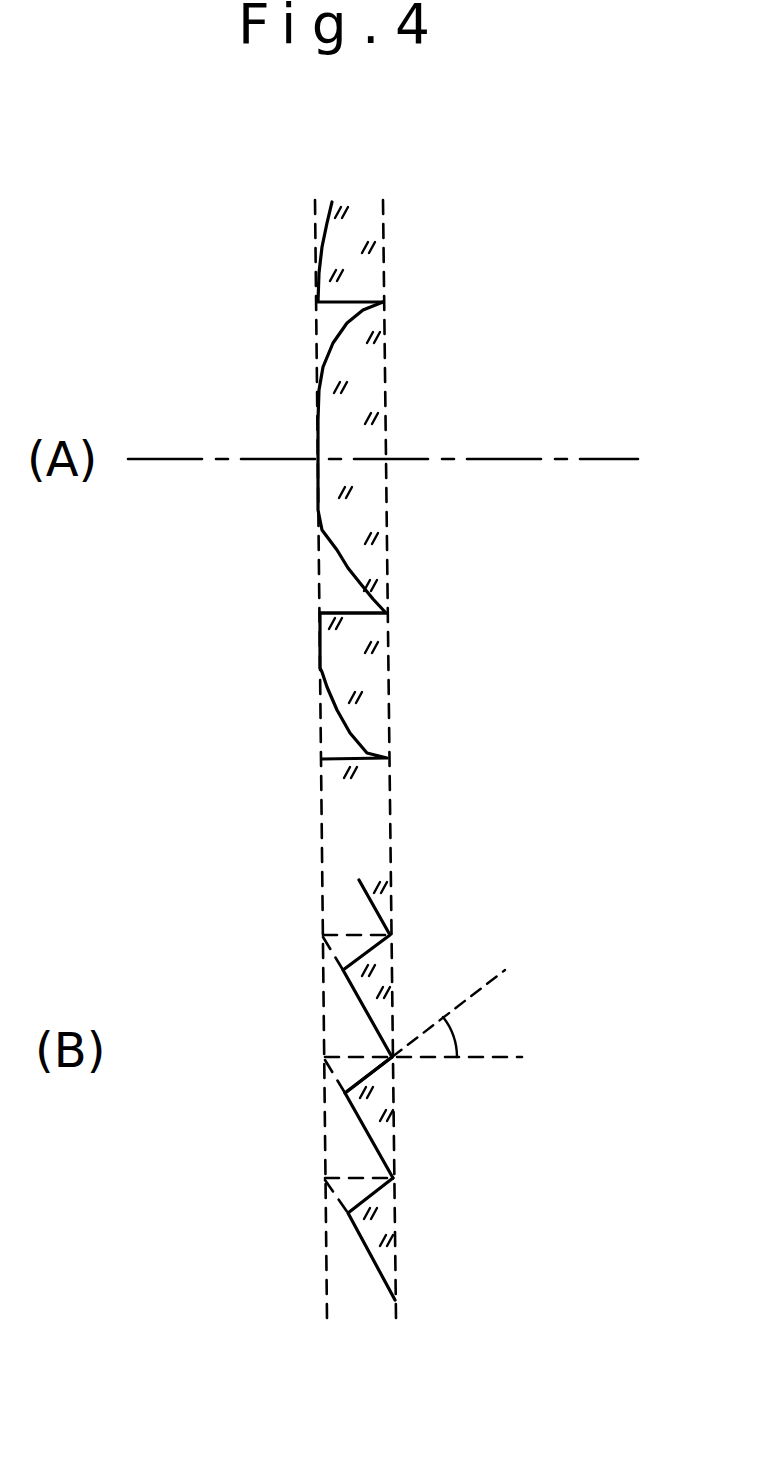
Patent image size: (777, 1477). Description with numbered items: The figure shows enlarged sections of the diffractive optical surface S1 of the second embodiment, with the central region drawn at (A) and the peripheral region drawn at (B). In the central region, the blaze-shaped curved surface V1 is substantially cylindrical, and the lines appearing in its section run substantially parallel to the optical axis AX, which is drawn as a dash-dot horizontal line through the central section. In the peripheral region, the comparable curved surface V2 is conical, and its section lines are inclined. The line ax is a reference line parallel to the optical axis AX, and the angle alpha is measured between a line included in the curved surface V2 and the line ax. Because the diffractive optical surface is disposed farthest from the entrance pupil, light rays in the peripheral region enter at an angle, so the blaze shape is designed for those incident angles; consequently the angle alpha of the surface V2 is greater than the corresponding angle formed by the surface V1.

The diffractive optical surface S1 is at (298, 231).
The curved surface V1 is at (322, 611).
The curved surface V2 is at (348, 1077).
The optical axis AX is at (591, 457).
The line parallel to the optical axis ax is at (515, 1057).